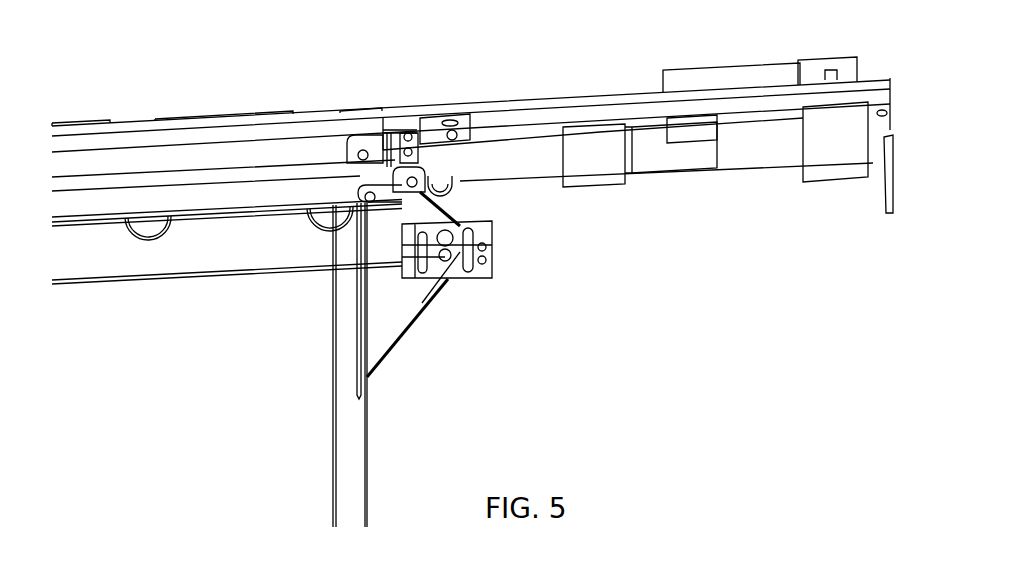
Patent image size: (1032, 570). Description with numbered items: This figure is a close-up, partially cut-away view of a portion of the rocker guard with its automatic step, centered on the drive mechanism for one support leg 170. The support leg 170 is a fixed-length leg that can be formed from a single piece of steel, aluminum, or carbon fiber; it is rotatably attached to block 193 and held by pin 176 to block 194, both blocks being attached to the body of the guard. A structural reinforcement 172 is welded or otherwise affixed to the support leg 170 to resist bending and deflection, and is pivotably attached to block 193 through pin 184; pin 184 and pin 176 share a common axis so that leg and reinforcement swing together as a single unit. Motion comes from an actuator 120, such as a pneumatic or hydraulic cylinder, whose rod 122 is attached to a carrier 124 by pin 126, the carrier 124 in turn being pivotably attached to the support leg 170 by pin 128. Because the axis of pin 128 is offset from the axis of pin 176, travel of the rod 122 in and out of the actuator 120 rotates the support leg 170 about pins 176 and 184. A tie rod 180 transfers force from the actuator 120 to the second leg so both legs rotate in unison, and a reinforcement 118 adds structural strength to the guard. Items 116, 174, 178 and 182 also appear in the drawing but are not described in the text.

The lower rail 116 is at (140, 262).
The reinforcement 118 is at (225, 118).
The actuator 120 is at (740, 167).
The rod 122 is at (490, 148).
The carrier 124 is at (385, 167).
The pin 126 is at (405, 175).
The pin 128 is at (353, 138).
The support leg 170 is at (368, 462).
The structural reinforcement 172 is at (390, 333).
The hub 174 is at (458, 185).
The pin 176 is at (440, 205).
The rod 178 is at (378, 202).
The tie rod 180 is at (150, 177).
The link 182 is at (363, 212).
The pin 184 is at (450, 270).
The block 193 is at (492, 240).
The block 194 is at (440, 125).